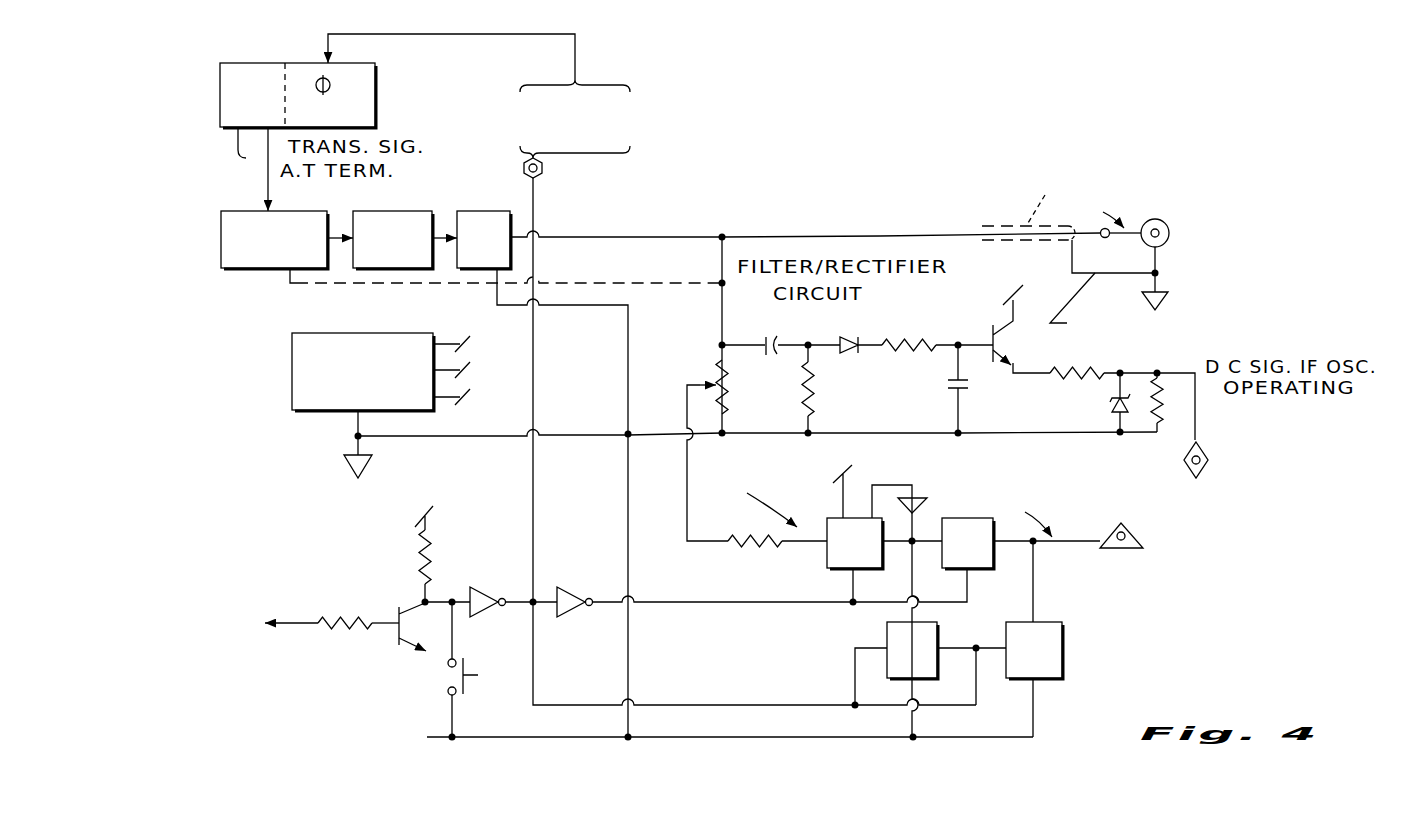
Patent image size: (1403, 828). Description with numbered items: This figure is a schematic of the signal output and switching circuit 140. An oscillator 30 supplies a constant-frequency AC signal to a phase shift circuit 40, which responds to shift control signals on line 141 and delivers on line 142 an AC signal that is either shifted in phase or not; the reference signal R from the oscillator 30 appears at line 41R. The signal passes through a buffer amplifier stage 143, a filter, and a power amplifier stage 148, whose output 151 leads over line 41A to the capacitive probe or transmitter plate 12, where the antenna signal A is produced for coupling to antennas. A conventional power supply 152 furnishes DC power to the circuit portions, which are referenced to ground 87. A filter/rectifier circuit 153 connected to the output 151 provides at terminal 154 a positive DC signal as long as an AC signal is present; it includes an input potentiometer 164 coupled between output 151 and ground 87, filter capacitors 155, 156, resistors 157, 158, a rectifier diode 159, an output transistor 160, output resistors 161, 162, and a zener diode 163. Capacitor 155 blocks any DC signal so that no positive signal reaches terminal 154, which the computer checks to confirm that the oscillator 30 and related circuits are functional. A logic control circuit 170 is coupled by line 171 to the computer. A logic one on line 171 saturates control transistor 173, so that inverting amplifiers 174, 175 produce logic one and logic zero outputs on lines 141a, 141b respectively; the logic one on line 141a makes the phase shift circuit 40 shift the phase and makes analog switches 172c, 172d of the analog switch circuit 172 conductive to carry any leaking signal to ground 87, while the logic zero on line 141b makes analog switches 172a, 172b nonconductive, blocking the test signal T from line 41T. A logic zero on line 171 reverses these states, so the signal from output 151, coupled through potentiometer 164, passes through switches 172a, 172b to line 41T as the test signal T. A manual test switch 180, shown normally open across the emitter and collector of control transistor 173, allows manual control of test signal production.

The oscillator 30 is at (220, 88).
The phase shift circuit 40 is at (375, 85).
The reference signal line 41R is at (231, 143).
The shift control line 141 is at (577, 62).
The line 142 is at (296, 211).
The buffer amplifier stage 143 is at (380, 211).
The power amplifier stage 148 is at (485, 211).
The signal output and switching circuit 140 is at (287, 285).
The amplifier output 151 is at (760, 236).
The shielded coaxial cable line 41A is at (905, 235).
The capacitive probe or transmitter plate 12 is at (1158, 224).
The power supply 152 is at (292, 383).
The ground 87 is at (373, 458).
The line 141a is at (533, 490).
The line 141b is at (668, 603).
The logic control circuit 170 is at (330, 588).
The control transistor 173 is at (392, 613).
The line 171 is at (294, 626).
The inverting amplifier 174 is at (481, 587).
The inverting amplifier 175 is at (569, 587).
The manual test switch 180 is at (461, 697).
The analog switches 172 is at (913, 561).
The analog switch 172a is at (827, 566).
The analog switch 172b is at (969, 518).
The analog switch 172c is at (887, 630).
The analog switch 172d is at (1062, 627).
The test signal line 41T is at (1080, 538).
The input potentiometer 164 is at (704, 376).
The filter capacitor 155 is at (773, 331).
The rectifier diode 159 is at (882, 333).
The resistor 157 is at (803, 385).
The resistor 158 is at (917, 351).
The filter capacitor 156 is at (950, 384).
The filter/rectifier circuit 153 is at (962, 337).
The output transistor 160 is at (1003, 366).
The output resistor 161 is at (1082, 376).
The zener diode 163 is at (1110, 407).
The output resistor 162 is at (1176, 420).
The terminal 154 is at (1200, 443).